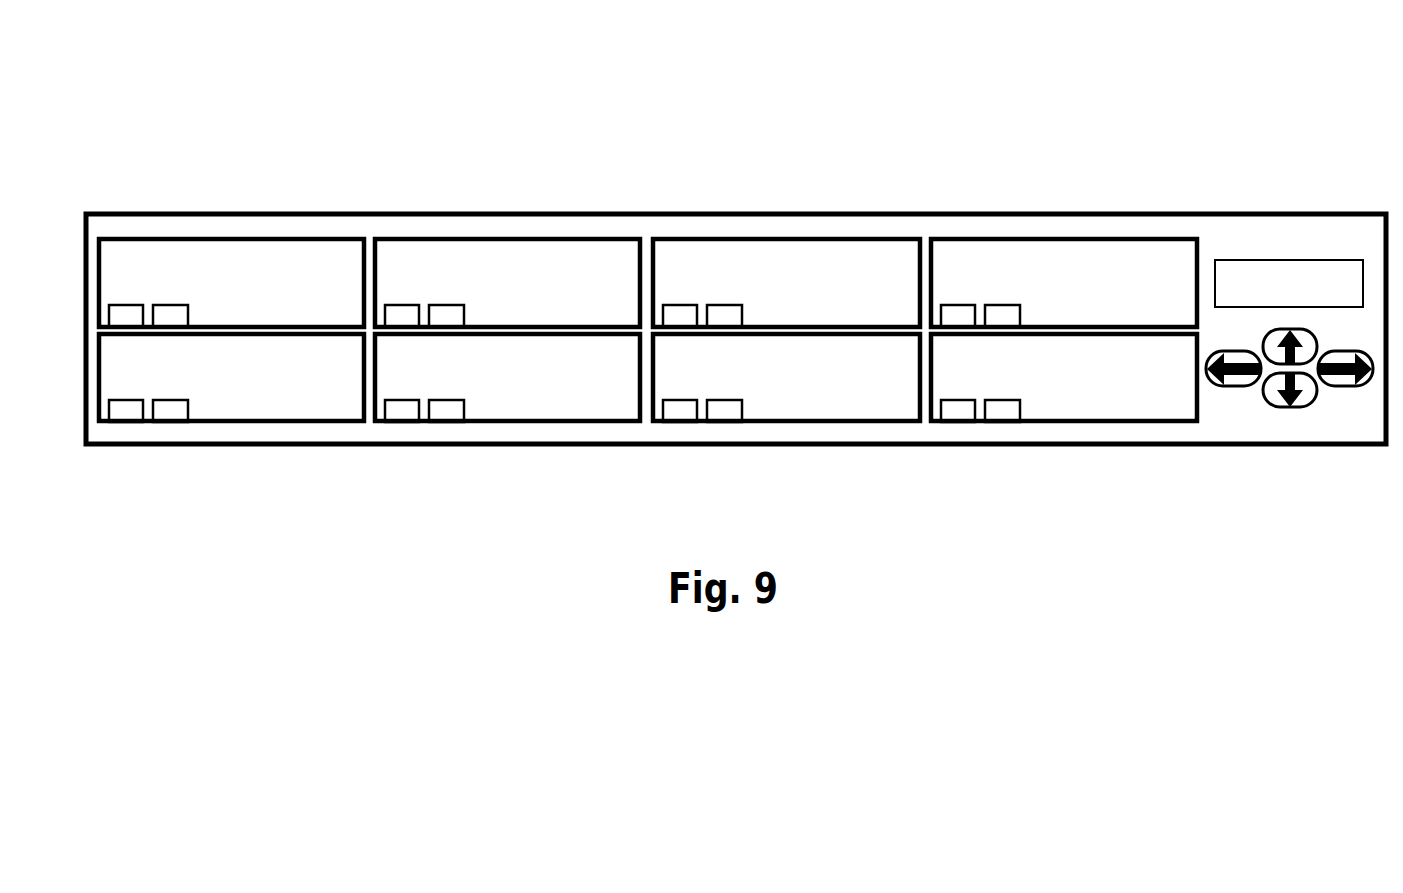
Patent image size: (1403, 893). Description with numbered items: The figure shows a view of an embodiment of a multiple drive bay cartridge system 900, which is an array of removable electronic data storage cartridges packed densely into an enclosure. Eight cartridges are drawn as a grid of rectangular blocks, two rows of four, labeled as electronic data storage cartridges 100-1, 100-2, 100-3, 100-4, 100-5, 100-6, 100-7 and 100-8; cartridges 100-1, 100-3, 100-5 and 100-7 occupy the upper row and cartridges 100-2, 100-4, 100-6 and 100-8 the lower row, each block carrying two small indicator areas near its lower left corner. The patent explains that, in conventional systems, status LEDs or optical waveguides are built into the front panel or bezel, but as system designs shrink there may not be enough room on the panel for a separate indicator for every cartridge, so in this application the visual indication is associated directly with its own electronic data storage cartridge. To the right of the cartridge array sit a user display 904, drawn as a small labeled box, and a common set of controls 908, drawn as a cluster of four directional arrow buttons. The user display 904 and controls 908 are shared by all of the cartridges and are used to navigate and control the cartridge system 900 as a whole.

The multiple drive bay cartridge system 900 is at (736, 234).
The electronic data storage cartridge 100-1 is at (252, 231).
The electronic data storage cartridge 100-2 is at (231, 446).
The electronic data storage cartridge 100-3 is at (534, 231).
The electronic data storage cartridge 100-4 is at (507, 446).
The electronic data storage cartridge 100-5 is at (790, 231).
The electronic data storage cartridge 100-6 is at (806, 446).
The electronic data storage cartridge 100-7 is at (1064, 231).
The electronic data storage cartridge 100-8 is at (1064, 446).
The user display 904 is at (1306, 227).
The controls 908 is at (1301, 444).